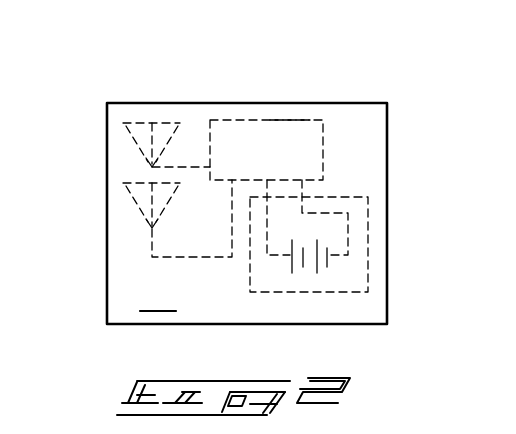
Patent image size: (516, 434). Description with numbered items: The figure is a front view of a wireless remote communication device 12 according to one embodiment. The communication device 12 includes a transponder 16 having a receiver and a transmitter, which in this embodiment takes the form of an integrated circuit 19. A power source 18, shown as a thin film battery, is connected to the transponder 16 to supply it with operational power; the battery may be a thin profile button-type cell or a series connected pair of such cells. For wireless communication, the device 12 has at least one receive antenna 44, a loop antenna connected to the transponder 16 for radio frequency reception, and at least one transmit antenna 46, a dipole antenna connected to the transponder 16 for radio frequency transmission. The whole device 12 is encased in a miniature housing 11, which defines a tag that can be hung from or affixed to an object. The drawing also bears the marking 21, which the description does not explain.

The wireless device 11 is at (107, 277).
The housing 12 is at (389, 152).
The circuitry 16 is at (247, 150).
The battery 18 is at (370, 240).
The connection 19 is at (289, 117).
The label 21 is at (160, 291).
The first antenna 44 is at (154, 124).
The second antenna 46 is at (135, 206).